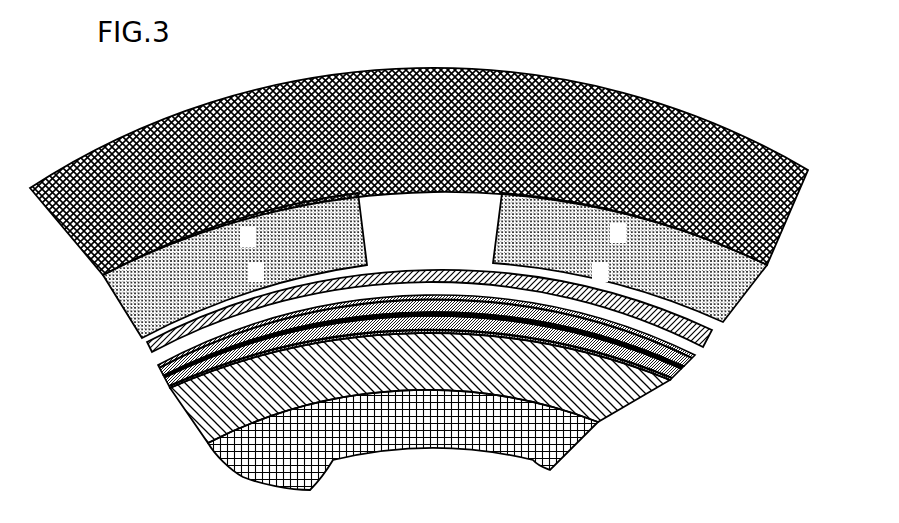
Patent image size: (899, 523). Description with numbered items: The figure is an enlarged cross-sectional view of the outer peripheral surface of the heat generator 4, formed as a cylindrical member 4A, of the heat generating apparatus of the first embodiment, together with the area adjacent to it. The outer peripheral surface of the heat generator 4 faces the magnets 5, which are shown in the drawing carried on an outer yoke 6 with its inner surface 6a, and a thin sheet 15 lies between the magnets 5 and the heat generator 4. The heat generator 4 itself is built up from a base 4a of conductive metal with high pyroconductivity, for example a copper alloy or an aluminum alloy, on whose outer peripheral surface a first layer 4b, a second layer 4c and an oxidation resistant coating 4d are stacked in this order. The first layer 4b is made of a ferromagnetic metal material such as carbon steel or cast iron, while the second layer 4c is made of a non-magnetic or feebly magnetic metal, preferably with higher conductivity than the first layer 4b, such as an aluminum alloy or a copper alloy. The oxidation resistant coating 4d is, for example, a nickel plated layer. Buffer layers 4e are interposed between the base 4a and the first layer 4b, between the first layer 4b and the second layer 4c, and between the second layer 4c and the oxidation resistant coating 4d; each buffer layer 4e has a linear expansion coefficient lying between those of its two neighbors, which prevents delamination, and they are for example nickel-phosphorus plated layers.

The yoke 6 is at (447, 171).
The yoke inner surface 6a is at (780, 232).
The magnets 5 is at (741, 302).
The sheet member 15 is at (710, 347).
The heat generator 4 is at (427, 396).
The cylindrical member 4A is at (427, 396).
The base 4a is at (633, 400).
The first layer 4b is at (667, 380).
The second layer 4c is at (678, 373).
The oxidation resistant coating 4d is at (692, 363).
The buffer layers 4e is at (162, 373).